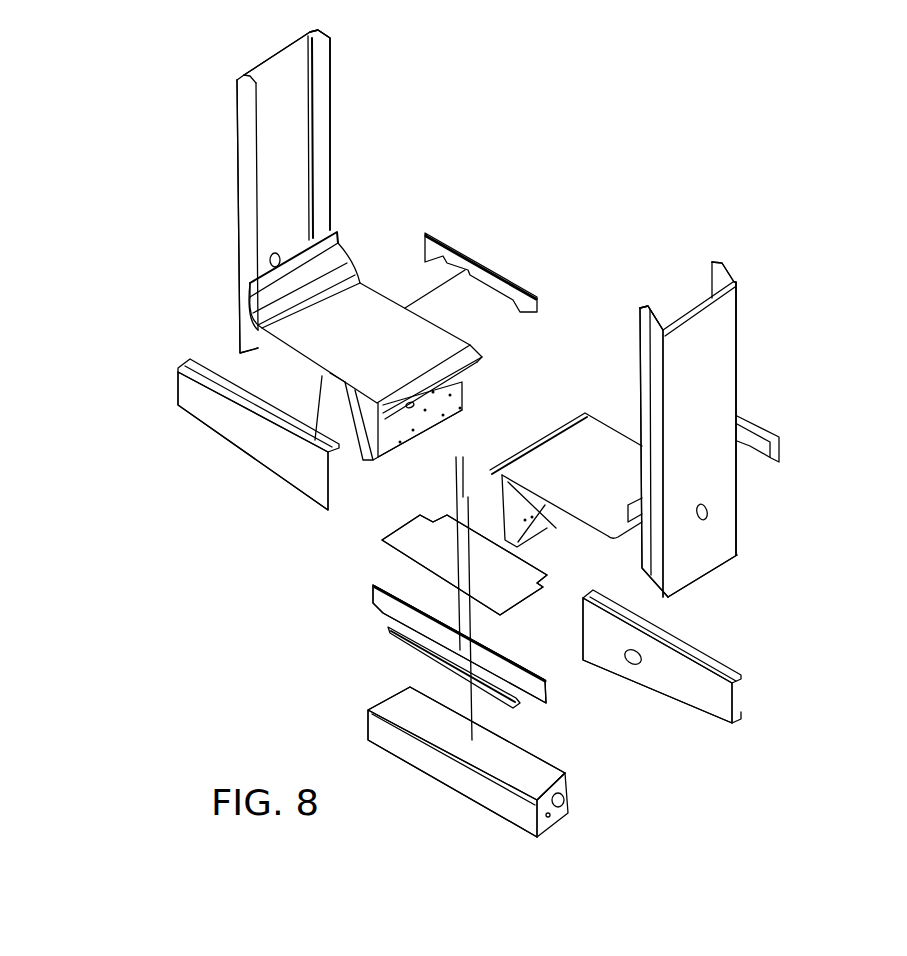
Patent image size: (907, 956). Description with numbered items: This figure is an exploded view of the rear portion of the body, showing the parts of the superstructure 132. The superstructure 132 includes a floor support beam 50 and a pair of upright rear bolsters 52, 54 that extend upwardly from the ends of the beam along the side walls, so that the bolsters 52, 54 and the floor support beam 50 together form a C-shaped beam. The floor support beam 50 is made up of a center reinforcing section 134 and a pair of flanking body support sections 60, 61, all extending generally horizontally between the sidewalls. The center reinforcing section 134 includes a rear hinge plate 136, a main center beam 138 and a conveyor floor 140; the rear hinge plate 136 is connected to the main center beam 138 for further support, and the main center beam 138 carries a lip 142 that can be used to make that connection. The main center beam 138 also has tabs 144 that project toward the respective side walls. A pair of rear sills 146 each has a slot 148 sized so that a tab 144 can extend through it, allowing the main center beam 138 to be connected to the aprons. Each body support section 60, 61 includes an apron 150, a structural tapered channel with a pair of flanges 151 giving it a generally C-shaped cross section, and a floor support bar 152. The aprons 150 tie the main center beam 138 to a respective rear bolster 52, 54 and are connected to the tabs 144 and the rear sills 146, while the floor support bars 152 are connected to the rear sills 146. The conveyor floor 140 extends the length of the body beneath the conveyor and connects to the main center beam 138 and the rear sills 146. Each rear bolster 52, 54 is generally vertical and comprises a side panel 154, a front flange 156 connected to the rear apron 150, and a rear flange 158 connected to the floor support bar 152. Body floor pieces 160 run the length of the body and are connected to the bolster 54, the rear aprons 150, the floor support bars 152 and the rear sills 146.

The floor support beam 50 is at (312, 681).
The rear bolster 52 is at (226, 172).
The rear bolster 54 is at (748, 390).
The body support section 60 is at (202, 442).
The body support section 61 is at (678, 714).
The superstructure 132 is at (514, 178).
The center reinforcing section 134 is at (463, 457).
The rear hinge plate 136 is at (555, 766).
The main center beam 138 is at (530, 667).
The conveyor floor 140 is at (380, 542).
The lip 142 is at (387, 632).
The tabs 144 is at (372, 587).
The rear sills 146 is at (410, 445).
The slot 148 is at (408, 430).
The apron 150 is at (178, 388).
The flanges 151 is at (187, 361).
The floor support bar 152 is at (443, 240).
The side panel 154 is at (277, 53).
The front flange 156 is at (248, 117).
The rear flange 158 is at (331, 96).
The body floor pieces 160 is at (382, 297).